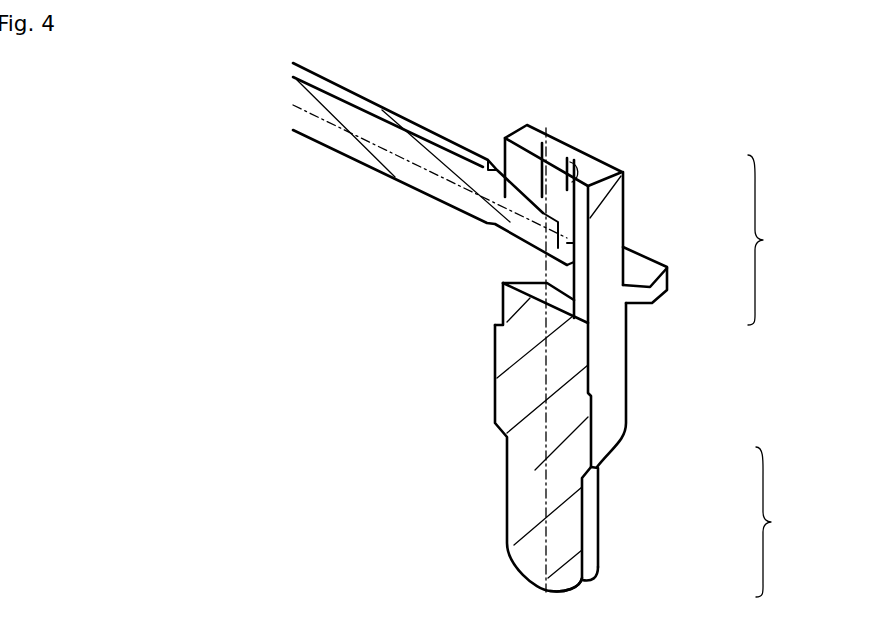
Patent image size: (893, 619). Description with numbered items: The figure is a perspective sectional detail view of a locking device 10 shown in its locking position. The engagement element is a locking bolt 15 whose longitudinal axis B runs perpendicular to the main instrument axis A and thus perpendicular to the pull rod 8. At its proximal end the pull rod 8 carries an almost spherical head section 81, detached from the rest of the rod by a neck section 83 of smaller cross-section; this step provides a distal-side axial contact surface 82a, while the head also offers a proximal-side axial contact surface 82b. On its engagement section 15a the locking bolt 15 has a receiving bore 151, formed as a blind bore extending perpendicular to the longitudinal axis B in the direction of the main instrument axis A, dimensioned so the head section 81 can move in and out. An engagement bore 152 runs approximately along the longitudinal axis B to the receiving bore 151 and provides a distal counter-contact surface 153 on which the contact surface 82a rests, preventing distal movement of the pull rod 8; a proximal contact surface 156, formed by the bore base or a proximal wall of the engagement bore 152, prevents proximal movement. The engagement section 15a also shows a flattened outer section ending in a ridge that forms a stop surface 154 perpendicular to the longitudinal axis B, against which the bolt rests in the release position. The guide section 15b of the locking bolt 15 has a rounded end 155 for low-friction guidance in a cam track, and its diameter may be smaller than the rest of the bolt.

The pull rod 8 is at (320, 157).
The locking device 10 is at (263, 328).
The locking bolt 15 is at (495, 370).
The engagement section 15a is at (788, 240).
The guide section 15b is at (791, 522).
The head section 81 is at (624, 180).
The distal-side axial contact surface 82a is at (573, 170).
The proximal-side axial contact surface 82b is at (652, 231).
The neck section 83 is at (510, 222).
The receiving bore 151 is at (523, 269).
The engagement bore 152 is at (577, 152).
The distal counter-contact surface 153 is at (548, 205).
The stop surface 154 is at (654, 304).
The rounded end 155 is at (564, 575).
The proximal contact surface 156 is at (590, 237).
The main instrument axis A is at (402, 158).
The longitudinal axis B is at (545, 502).